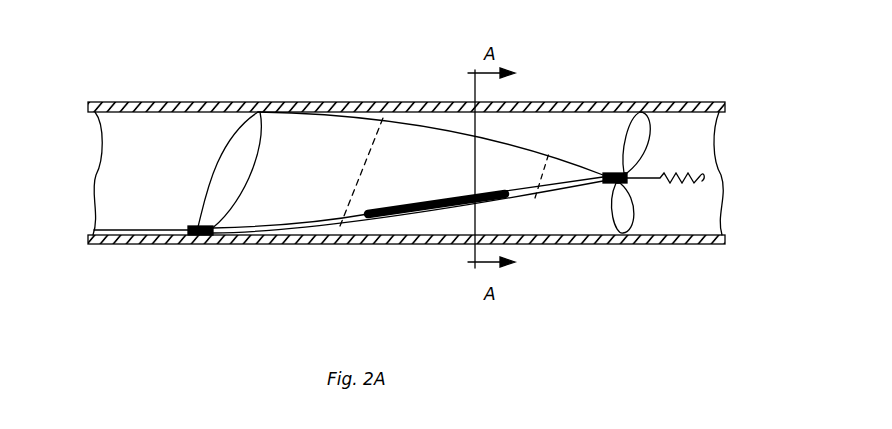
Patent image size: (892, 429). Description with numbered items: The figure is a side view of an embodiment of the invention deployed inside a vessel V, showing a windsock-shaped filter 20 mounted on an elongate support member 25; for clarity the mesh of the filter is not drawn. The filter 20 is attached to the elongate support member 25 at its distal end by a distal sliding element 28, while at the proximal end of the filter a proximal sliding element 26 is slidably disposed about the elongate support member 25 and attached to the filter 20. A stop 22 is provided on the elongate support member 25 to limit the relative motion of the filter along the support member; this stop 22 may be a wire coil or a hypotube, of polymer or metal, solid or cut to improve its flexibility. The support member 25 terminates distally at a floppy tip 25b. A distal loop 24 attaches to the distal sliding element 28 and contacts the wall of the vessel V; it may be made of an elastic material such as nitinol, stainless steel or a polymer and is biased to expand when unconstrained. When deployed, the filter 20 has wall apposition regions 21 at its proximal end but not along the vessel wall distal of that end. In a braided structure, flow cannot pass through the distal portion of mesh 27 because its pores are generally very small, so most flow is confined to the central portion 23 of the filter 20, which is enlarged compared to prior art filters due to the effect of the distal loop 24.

The vessel V is at (132, 101).
The windsock-shaped filter 20 is at (525, 142).
The wall apposition regions 21 is at (328, 124).
The stop 22 is at (427, 214).
The central portion 23 is at (437, 138).
The distal loop 24 is at (653, 137).
The elongate support member 25 is at (148, 230).
The floppy tip 25b is at (703, 173).
The proximal sliding element 26 is at (197, 236).
The distal portion of mesh 27 is at (558, 177).
The distal sliding element 28 is at (609, 186).